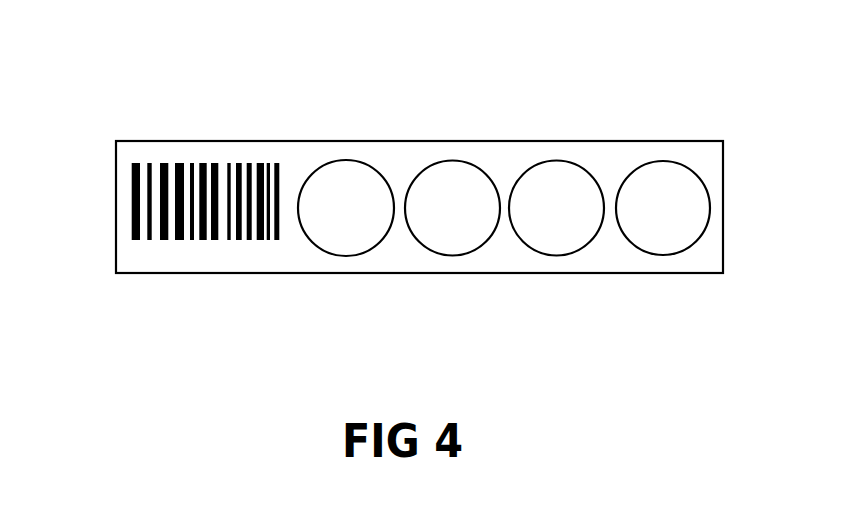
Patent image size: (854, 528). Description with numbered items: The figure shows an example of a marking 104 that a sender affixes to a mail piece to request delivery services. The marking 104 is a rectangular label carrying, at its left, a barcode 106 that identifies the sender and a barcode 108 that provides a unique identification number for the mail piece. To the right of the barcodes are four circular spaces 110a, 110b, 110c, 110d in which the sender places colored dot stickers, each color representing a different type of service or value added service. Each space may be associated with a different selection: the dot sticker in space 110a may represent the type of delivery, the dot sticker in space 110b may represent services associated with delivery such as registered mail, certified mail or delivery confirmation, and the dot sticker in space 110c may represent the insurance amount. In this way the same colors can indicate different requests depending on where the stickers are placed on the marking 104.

The marking 104 is at (528, 122).
The barcode 106 is at (157, 197).
The barcode 108 is at (258, 187).
The space 110a is at (346, 256).
The space 110b is at (462, 254).
The space 110c is at (570, 252).
The space 110d is at (690, 252).